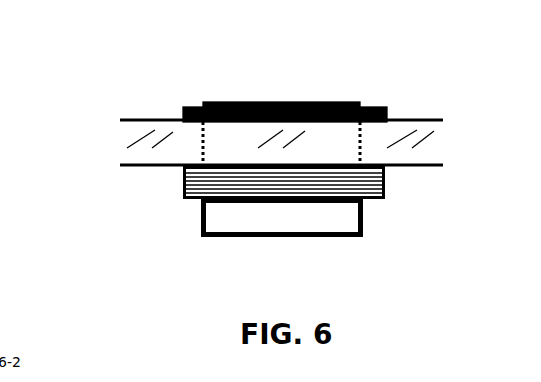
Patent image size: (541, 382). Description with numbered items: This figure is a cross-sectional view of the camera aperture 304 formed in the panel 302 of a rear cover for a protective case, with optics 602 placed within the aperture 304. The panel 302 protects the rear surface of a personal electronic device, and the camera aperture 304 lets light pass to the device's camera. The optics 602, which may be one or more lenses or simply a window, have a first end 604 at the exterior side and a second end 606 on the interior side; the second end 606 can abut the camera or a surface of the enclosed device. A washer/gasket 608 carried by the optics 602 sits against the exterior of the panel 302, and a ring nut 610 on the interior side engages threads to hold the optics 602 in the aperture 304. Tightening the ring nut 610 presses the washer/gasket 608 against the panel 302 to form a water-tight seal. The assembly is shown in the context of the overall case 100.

The display device 100 is at (0, 290).
The panel 302 is at (413, 118).
The camera aperture 304 is at (108, 91).
The optics 602 is at (414, 226).
The first end 604 is at (292, 93).
The second end 606 is at (313, 243).
The washer/gasket 608 is at (193, 105).
The ring nut 610 is at (180, 190).